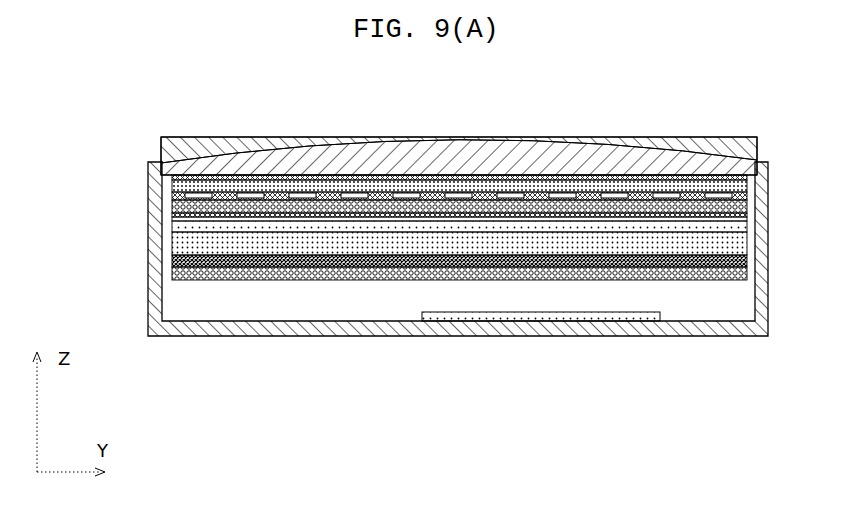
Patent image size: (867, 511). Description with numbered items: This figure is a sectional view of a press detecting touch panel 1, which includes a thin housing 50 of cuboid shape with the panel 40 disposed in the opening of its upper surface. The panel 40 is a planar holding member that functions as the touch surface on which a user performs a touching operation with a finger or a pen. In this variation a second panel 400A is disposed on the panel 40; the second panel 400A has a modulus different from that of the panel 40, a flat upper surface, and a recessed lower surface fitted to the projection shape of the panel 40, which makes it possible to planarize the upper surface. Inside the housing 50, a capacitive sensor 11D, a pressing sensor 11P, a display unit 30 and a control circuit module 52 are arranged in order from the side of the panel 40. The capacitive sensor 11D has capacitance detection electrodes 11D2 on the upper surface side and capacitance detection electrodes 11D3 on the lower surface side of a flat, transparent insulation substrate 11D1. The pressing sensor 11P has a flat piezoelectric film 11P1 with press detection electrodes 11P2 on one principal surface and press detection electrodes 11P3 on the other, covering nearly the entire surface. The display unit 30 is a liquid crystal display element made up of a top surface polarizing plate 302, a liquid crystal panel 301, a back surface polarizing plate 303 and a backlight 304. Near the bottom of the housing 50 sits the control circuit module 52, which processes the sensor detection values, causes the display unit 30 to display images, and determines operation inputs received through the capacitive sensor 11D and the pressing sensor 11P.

The press detecting touch panel 1 is at (690, 93).
The panel 40 is at (418, 118).
The second panel 400A is at (232, 136).
The capacitive sensor 11D is at (390, 170).
The insulation substrate 11D1 is at (171, 186).
The capacitance detection electrodes 11D2 is at (171, 176).
The capacitance detection electrodes 11D3 is at (171, 196).
The pressing sensor 11P is at (390, 231).
The piezoelectric film 11P1 is at (171, 215).
The press detection electrodes 11P2 is at (171, 206).
The press detection electrodes 11P3 is at (171, 219).
The display unit 30 is at (509, 254).
The liquid crystal panel 301 is at (748, 237).
The top surface polarizing plate 302 is at (748, 222).
The back surface polarizing plate 303 is at (748, 263).
The backlight 304 is at (489, 281).
The housing 50 is at (742, 338).
The control circuit module 52 is at (617, 324).